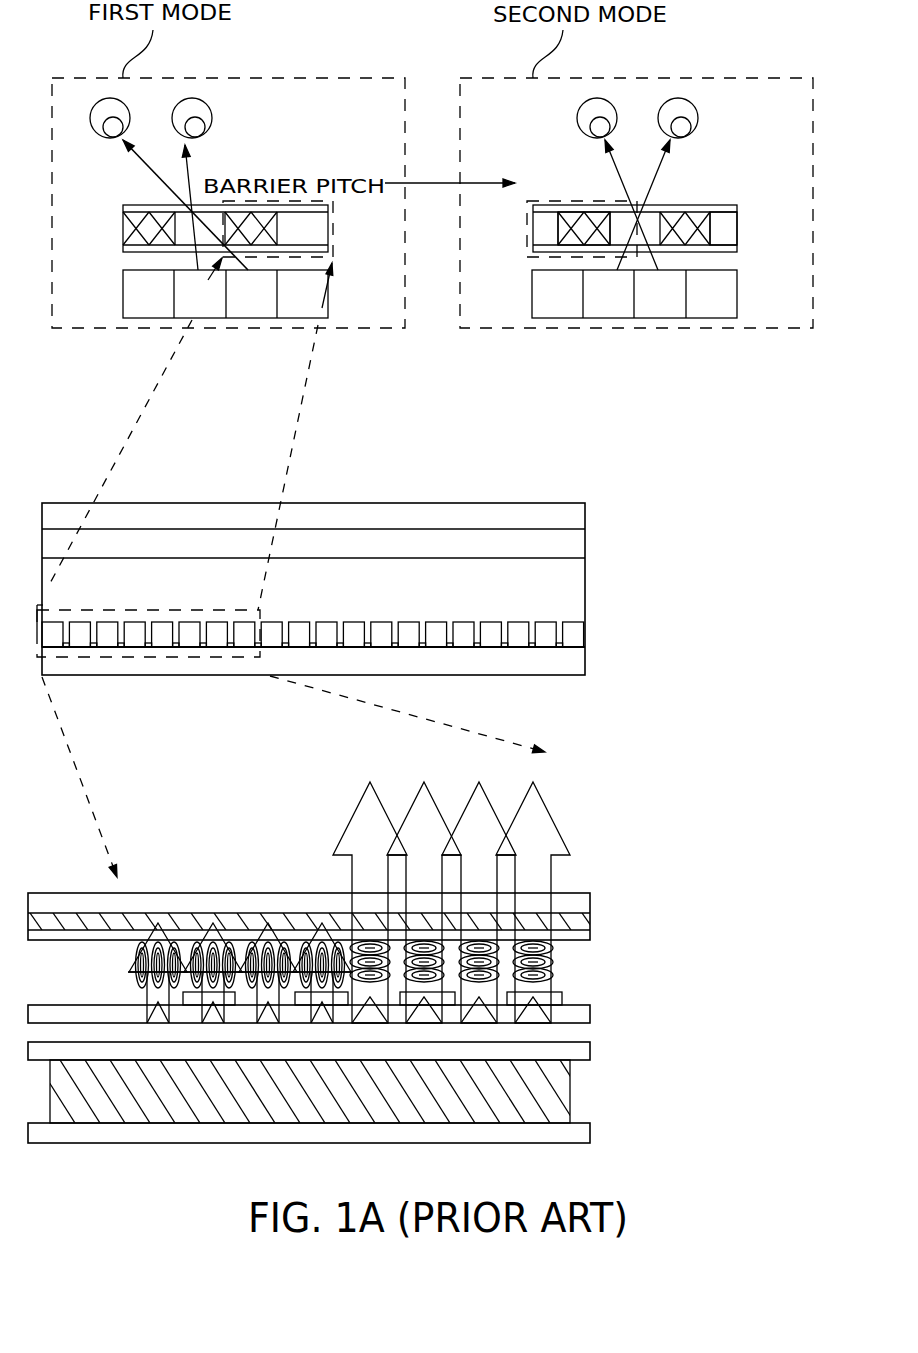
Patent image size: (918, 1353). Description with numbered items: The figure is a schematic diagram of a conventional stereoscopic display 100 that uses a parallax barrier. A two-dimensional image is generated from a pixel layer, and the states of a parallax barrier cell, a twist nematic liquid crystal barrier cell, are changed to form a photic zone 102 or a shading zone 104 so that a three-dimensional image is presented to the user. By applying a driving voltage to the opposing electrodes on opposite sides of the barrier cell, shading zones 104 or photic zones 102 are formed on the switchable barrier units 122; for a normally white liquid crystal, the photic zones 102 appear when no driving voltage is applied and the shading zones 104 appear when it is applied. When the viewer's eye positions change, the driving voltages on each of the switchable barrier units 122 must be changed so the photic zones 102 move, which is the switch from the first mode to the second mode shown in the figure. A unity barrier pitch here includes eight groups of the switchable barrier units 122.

The stereoscopic display 100 is at (367, 962).
The photic zone 102 is at (723, 227).
The shading zone 104 is at (568, 227).
The switchable barrier units 122 is at (352, 685).